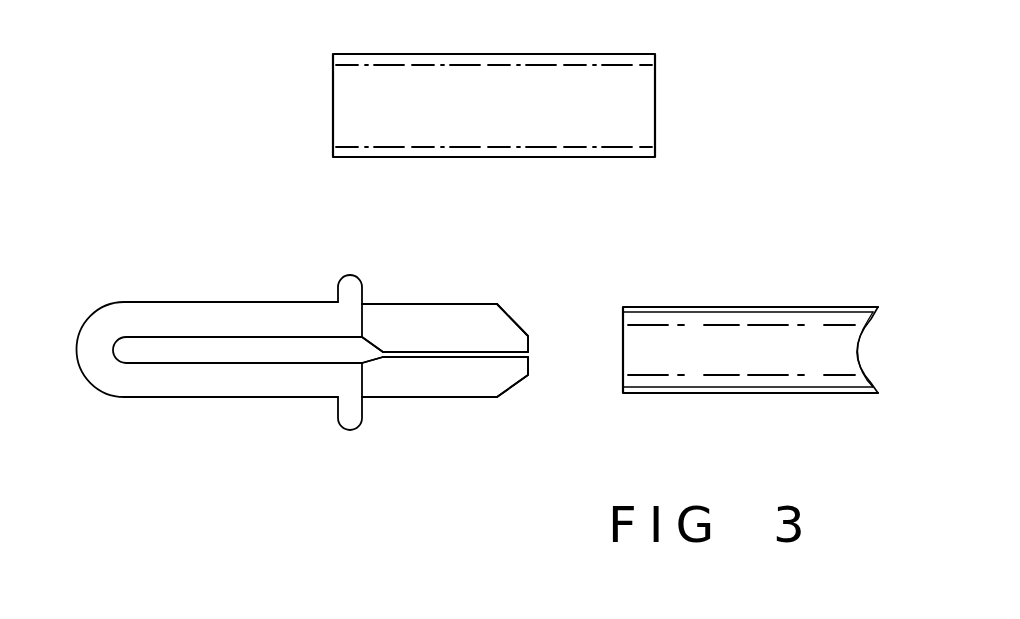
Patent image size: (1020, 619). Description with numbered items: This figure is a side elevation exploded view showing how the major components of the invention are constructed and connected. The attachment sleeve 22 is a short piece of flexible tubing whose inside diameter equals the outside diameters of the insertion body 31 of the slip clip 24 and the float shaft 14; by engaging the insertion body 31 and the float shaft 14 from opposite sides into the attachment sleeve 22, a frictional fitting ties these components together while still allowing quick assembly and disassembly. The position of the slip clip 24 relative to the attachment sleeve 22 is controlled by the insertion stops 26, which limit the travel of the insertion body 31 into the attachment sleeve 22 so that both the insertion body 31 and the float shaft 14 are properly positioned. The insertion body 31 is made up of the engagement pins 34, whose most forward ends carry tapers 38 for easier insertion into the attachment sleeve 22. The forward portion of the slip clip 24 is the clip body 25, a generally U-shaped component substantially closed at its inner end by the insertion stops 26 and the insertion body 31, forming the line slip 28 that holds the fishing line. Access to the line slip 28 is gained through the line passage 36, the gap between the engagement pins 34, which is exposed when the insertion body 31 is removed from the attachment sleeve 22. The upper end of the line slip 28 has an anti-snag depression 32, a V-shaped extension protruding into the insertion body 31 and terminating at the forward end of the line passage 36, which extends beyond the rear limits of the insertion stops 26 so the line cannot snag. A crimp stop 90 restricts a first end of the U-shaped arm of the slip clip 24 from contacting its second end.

The float shaft 14 is at (773, 302).
The attachment sleeve 22 is at (327, 90).
The slip clip 24 is at (233, 293).
The clip body 25 is at (108, 280).
The insertion stops 26 is at (342, 275).
The line slip 28 is at (145, 360).
The insertion body 31 is at (447, 303).
The anti-snag depression 32 is at (367, 353).
The engagement pins 34 is at (403, 332).
The line passage 36 is at (460, 358).
The tapers 38 is at (520, 318).
The crimp stop 90 is at (442, 345).